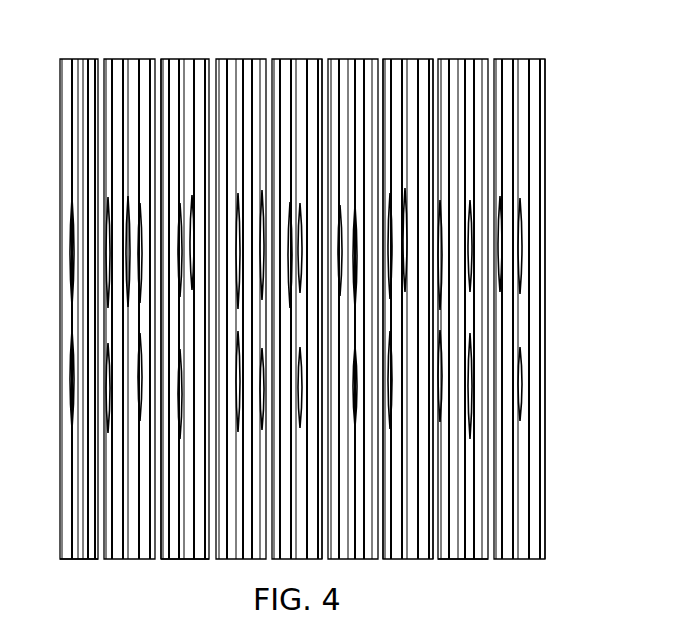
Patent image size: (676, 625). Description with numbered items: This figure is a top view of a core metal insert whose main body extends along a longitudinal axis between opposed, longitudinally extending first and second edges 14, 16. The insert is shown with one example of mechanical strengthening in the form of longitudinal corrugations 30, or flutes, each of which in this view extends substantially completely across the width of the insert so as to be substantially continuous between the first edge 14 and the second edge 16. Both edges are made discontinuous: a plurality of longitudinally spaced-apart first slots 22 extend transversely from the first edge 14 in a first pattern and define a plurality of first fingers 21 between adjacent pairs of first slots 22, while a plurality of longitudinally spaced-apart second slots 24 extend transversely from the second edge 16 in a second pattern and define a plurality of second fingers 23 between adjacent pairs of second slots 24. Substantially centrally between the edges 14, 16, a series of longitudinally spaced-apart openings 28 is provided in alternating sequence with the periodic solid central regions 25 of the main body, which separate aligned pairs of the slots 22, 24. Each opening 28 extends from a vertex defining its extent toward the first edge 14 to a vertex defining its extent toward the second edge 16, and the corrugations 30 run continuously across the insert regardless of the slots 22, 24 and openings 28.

The first edge 14 is at (341, 306).
The second edge 16 is at (462, 561).
The first fingers 21 is at (118, 60).
The first slots 22 is at (322, 56).
The second fingers 23 is at (86, 558).
The second slots 24 is at (160, 559).
The solid central region 25 is at (212, 292).
The openings 28 is at (124, 304).
The longitudinal corrugations 30 is at (549, 507).